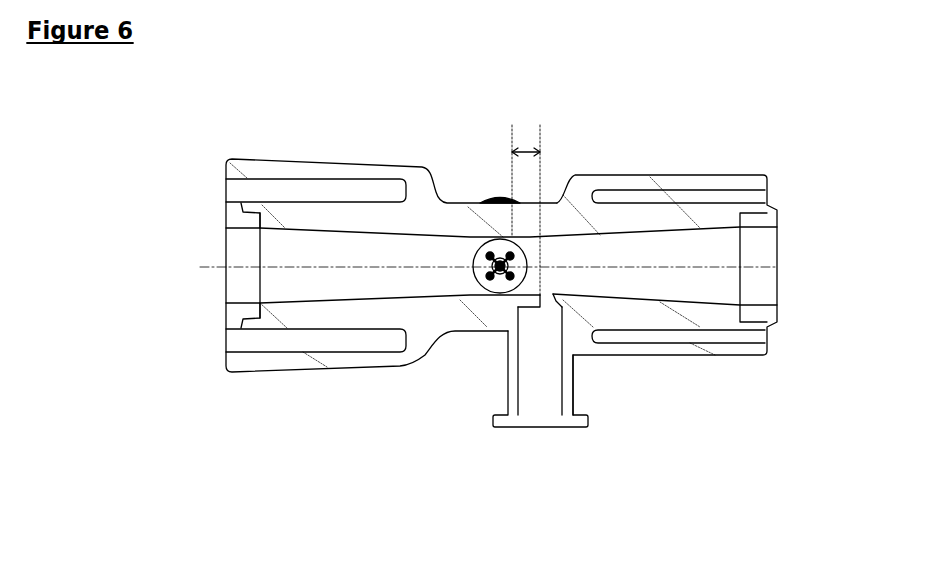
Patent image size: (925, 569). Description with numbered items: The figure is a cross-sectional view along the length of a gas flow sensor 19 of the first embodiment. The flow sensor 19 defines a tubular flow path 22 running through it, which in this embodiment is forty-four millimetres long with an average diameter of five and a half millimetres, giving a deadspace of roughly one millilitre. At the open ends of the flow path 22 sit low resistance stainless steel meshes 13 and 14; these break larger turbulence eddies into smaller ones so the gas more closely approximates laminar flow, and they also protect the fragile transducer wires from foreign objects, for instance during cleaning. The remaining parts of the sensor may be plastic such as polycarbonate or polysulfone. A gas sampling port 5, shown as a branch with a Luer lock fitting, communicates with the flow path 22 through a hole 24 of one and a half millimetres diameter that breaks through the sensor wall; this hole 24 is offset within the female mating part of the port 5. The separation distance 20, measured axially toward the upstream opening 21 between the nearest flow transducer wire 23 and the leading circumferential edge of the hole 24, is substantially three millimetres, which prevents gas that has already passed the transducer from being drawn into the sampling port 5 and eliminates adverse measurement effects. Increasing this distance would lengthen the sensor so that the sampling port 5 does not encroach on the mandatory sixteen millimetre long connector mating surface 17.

The gas sampling port 5 is at (558, 430).
The stainless steel mesh 13 is at (743, 285).
The stainless steel mesh 14 is at (258, 248).
The connector mating surface 17 is at (642, 356).
The flow sensor 19 is at (445, 188).
The separation distance 20 is at (527, 140).
The upstream opening 21 is at (763, 257).
The flow path 22 is at (387, 257).
The flow transducer wire 23 is at (510, 294).
The hole 24 is at (547, 307).